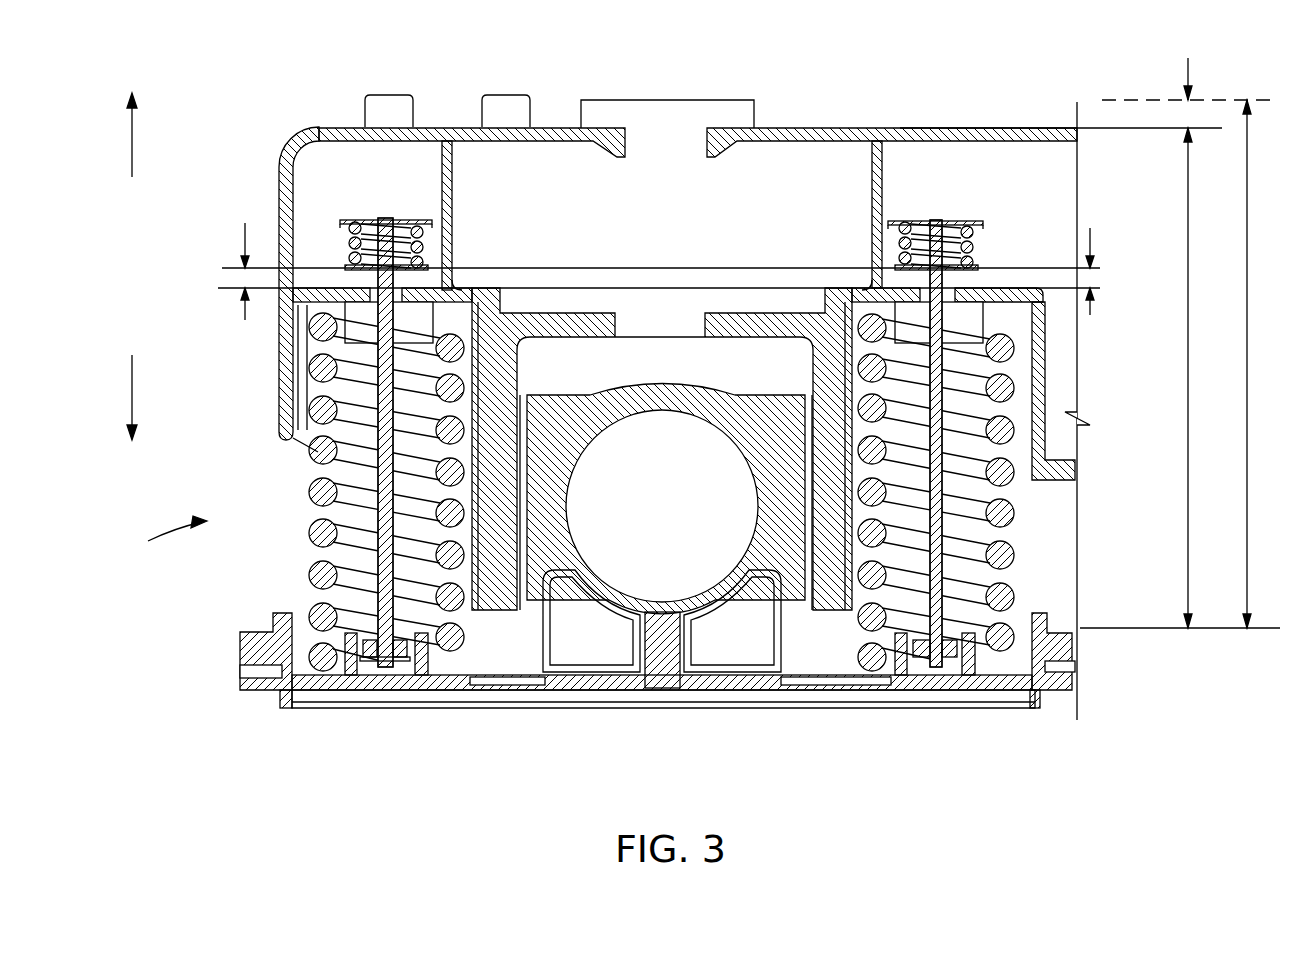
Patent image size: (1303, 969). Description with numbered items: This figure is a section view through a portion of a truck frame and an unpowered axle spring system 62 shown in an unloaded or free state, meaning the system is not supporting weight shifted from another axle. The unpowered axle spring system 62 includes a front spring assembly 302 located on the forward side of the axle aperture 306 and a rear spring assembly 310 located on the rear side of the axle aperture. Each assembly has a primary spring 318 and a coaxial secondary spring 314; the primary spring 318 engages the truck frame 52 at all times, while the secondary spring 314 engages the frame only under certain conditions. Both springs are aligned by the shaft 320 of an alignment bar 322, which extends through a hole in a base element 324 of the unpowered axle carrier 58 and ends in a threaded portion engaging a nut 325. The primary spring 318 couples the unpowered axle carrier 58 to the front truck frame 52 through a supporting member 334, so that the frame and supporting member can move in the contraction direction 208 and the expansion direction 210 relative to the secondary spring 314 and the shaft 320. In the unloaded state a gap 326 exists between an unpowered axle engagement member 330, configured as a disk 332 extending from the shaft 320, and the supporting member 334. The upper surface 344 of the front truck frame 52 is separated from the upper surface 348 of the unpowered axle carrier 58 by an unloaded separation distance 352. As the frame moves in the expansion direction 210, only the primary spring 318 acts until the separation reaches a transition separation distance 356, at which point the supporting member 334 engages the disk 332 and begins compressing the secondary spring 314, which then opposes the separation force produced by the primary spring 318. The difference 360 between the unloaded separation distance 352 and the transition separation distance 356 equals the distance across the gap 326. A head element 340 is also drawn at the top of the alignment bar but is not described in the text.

The truck frame 52 is at (822, 128).
The unpowered axle carrier 58 is at (252, 650).
The unpowered axle spring system 62 is at (160, 538).
The contraction direction 208 is at (128, 383).
The expansion direction 210 is at (130, 136).
The front spring assembly 302 is at (266, 463).
The axle aperture 306 is at (675, 515).
The rear spring assembly 310 is at (1045, 489).
The secondary spring 314 is at (428, 232).
The primary spring 318 is at (309, 490).
The shaft 320 is at (378, 570).
The alignment bar 322 is at (385, 665).
The base element 324 is at (410, 660).
The nut 325 is at (372, 662).
The gap 326 is at (245, 240).
The unpowered axle engagement member 330 is at (430, 270).
The disk 332 is at (348, 265).
The supporting member 334 is at (430, 288).
The bolt head 340 is at (402, 220).
The upper surface of the front truck frame 344 is at (1006, 127).
The upper surface of the unpowered axle carrier 348 is at (1080, 628).
The unloaded separation distance 352 is at (1185, 384).
The transition separation distance 356 is at (1247, 258).
The difference 360 is at (1186, 72).